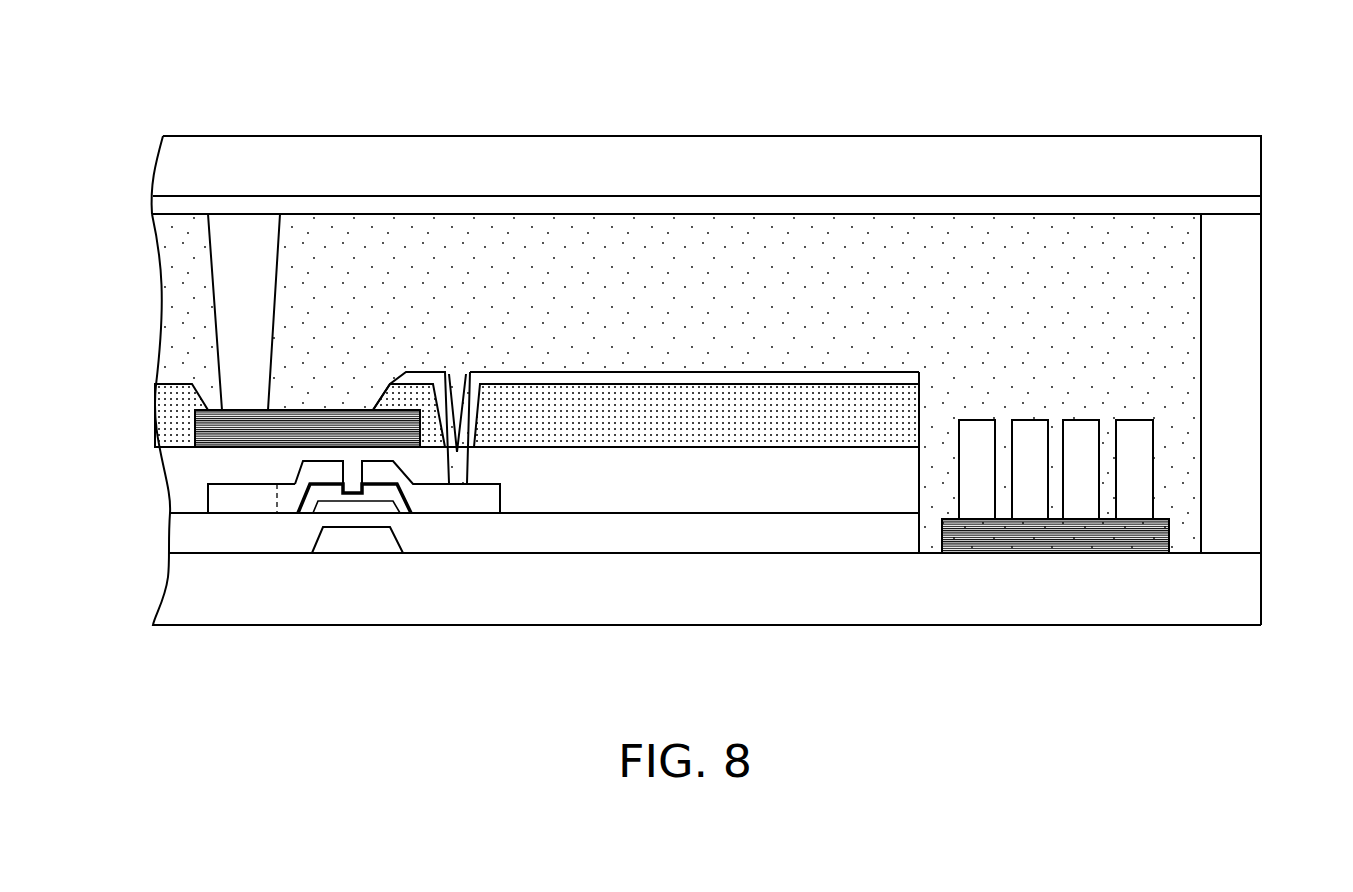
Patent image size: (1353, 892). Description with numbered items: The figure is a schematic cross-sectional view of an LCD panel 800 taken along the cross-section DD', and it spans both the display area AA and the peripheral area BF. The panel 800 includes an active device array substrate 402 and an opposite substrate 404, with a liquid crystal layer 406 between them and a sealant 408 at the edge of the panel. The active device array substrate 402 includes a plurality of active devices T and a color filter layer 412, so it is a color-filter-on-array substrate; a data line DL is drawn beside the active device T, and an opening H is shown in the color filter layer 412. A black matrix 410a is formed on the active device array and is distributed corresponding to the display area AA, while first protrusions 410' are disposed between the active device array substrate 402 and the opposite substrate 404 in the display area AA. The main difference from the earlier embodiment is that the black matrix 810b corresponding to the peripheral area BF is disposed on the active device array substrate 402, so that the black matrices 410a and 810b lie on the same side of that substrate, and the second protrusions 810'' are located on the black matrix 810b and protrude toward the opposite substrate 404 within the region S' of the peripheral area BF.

The LCD panel 800 is at (1257, 680).
The active device array substrate 402 is at (128, 373).
The opposite substrate 404 is at (128, 133).
The liquid crystal layer 406 is at (188, 263).
The sealant 408 is at (1245, 365).
The first protrusions 410' is at (177, 312).
The black matrix 410a is at (338, 410).
The color filter layer 412 is at (647, 408).
The opening H is at (461, 375).
The active devices T is at (289, 474).
The data line DL is at (225, 503).
The second protrusions 810'' is at (1147, 469).
The black matrix 810b is at (1153, 532).
The sealant region S' is at (1209, 269).
The cross-section D-D' DD' is at (711, 45).
The display area AA is at (928, 114).
The peripheral area BF is at (1153, 114).